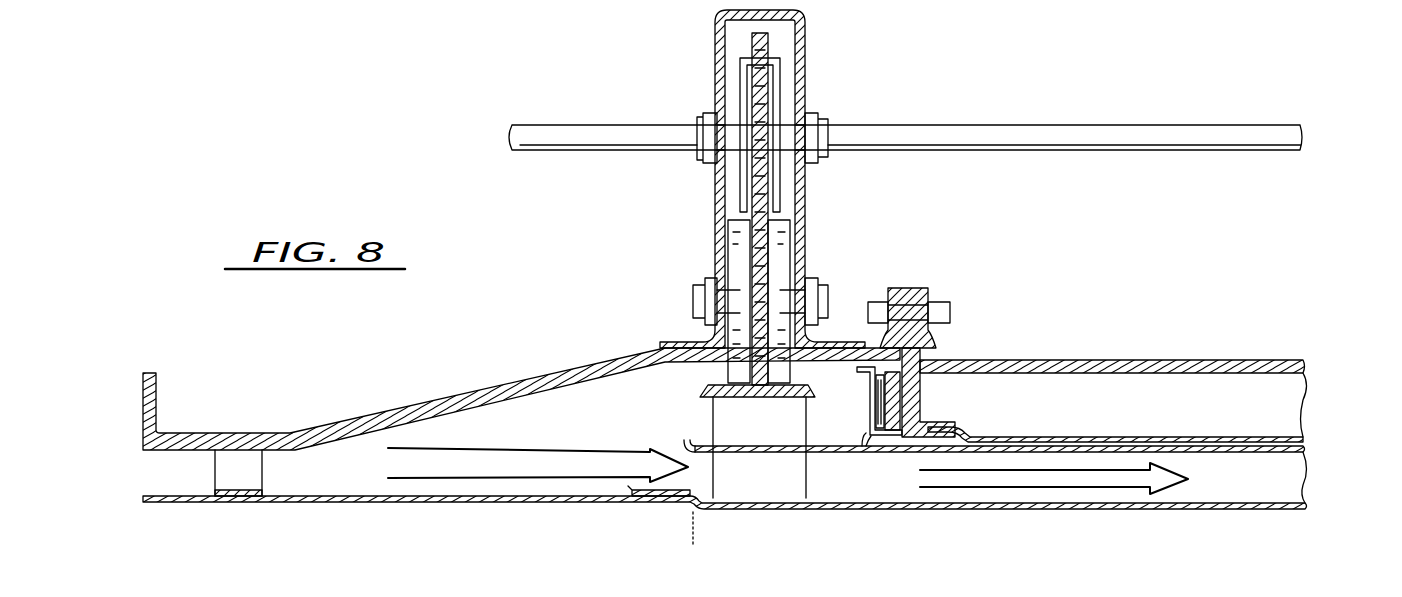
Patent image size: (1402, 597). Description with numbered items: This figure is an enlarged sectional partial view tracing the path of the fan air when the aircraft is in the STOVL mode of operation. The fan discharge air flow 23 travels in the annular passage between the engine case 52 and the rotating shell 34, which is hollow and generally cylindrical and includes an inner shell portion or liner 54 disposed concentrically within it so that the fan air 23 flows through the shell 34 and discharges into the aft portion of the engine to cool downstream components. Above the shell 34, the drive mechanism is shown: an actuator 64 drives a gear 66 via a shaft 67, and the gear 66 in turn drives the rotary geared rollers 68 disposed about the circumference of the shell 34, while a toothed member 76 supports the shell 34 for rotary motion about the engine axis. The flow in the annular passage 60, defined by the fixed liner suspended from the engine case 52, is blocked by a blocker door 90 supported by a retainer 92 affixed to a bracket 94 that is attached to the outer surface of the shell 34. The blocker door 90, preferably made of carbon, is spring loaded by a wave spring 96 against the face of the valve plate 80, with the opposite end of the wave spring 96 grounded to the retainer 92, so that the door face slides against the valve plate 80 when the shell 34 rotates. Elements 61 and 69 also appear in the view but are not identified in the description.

The fan discharge air flow 23 is at (530, 465).
The shell 34 is at (1230, 455).
The engine case 52 is at (520, 380).
The inner shell portion or liner 54 is at (1185, 509).
The annular passage 60 is at (1222, 388).
The annular gap 61 is at (873, 488).
The actuator 64 is at (800, 48).
The gear 66 is at (781, 97).
The shaft 67 is at (600, 150).
The rotary geared rollers 68 is at (735, 265).
The sleeve 69 is at (788, 248).
The member 76 is at (698, 387).
The valve plate 80 is at (918, 428).
The blocker doors 90 is at (935, 345).
The retainer 92 is at (905, 440).
The bracket 94 is at (862, 432).
The wave spring 96 is at (873, 412).